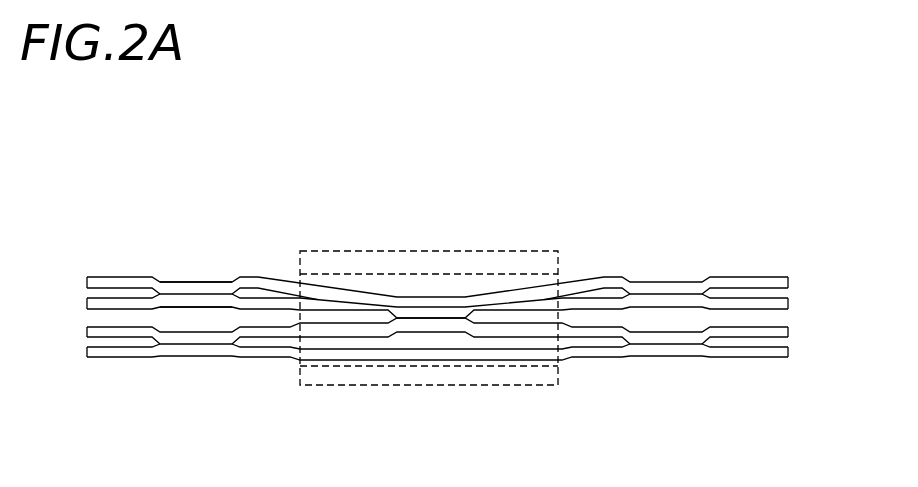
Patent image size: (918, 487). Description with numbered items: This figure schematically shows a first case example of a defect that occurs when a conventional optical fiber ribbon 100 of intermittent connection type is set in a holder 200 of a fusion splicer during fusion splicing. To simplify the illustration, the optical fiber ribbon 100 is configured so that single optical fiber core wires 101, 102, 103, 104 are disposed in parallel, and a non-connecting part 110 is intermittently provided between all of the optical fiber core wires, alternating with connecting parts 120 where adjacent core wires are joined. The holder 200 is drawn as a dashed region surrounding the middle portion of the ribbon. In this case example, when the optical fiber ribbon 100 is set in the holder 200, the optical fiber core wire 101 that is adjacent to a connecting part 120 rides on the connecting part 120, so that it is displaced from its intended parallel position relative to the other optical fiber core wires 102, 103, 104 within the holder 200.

The optical fiber ribbon 100 is at (697, 226).
The optical fiber core wire 101 is at (86, 283).
The optical fiber core wire 102 is at (86, 304).
The optical fiber core wire 103 is at (86, 332).
The optical fiber core wire 104 is at (86, 354).
The non-connecting part 110 is at (197, 322).
The connecting part 120 is at (193, 280).
The holder 200 is at (423, 248).